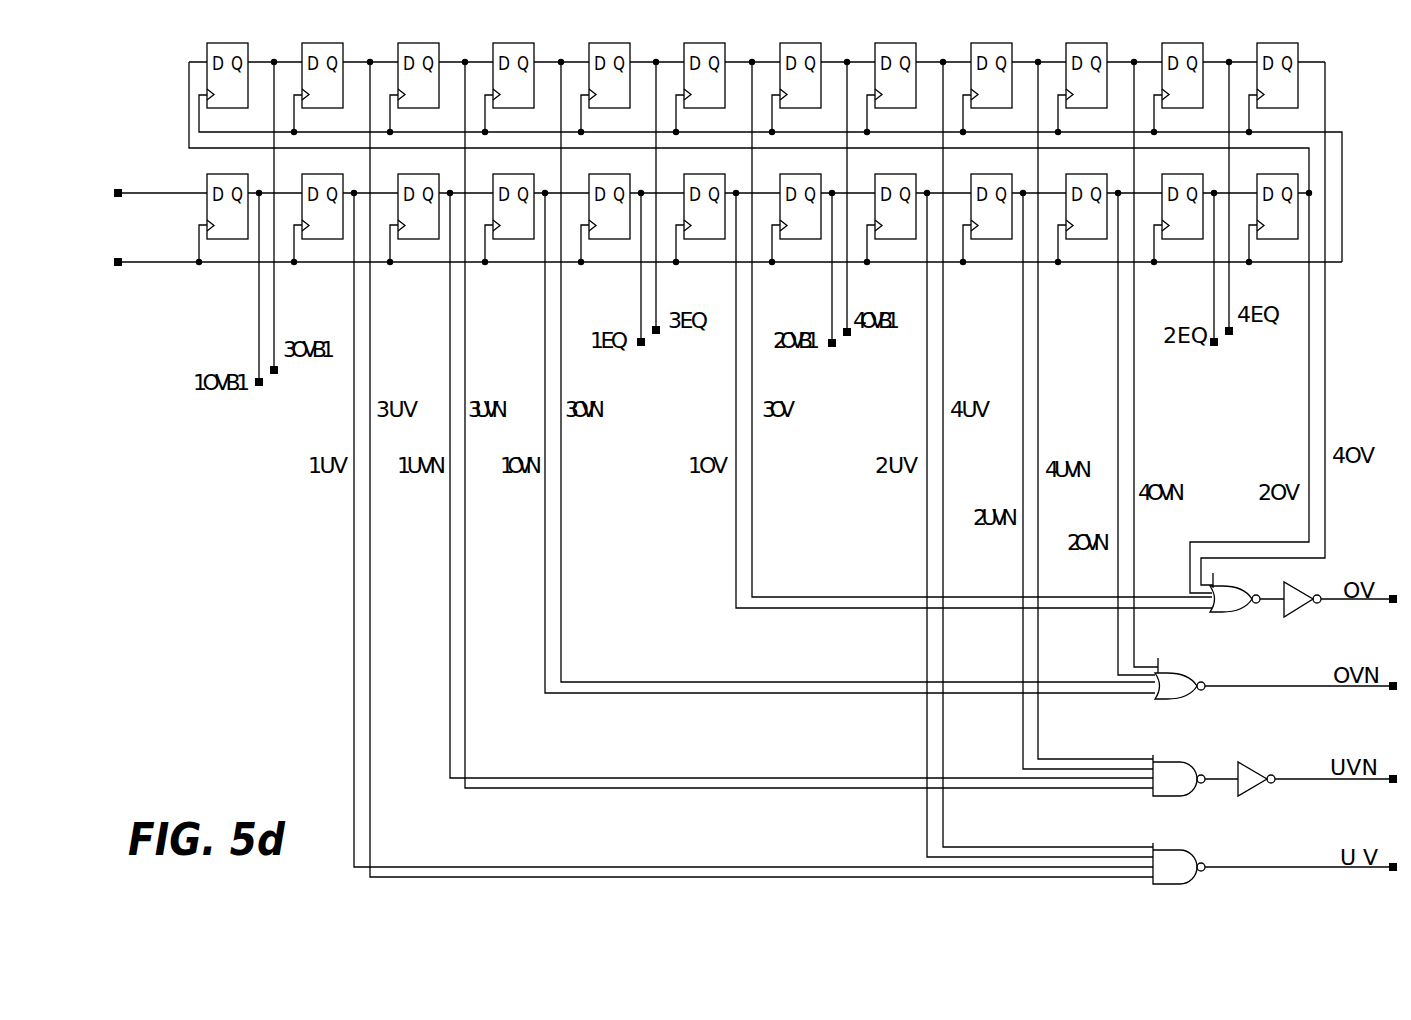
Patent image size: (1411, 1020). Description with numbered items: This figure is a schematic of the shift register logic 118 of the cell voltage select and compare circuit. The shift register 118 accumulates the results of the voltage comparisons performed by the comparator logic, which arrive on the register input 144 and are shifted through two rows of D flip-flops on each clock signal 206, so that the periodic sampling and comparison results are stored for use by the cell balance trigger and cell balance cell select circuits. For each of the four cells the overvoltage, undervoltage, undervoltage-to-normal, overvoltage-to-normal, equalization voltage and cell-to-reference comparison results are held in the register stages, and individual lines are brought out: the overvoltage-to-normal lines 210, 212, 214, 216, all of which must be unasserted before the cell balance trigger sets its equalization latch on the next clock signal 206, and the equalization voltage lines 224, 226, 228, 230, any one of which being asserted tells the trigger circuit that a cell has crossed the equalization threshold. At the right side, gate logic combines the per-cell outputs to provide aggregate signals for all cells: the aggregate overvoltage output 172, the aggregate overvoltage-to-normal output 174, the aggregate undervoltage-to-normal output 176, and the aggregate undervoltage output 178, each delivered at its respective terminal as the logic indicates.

The shift register logic 118 is at (189, 529).
The comparator output input line 144 is at (118, 189).
The clock signal 206 is at (118, 268).
The OVN line for cell one 210 is at (546, 312).
The OVN line for cell three 214 is at (562, 276).
The EQ line for cell three 228 is at (657, 283).
The OVN line for cell two 212 is at (1118, 297).
The OVN line for cell four 216 is at (1134, 287).
The EQ line for cell four 230 is at (1229, 290).
The EQ line for cell one 224 is at (645, 343).
The EQ line for cell two 226 is at (1216, 344).
The aggregate overvoltage signal OV 172 is at (1392, 605).
The aggregate overvoltage-to-normal signal OVN 174 is at (1392, 690).
The aggregate undervoltage-to-normal signal UVN 176 is at (1392, 783).
The aggregate undervoltage signal UV 178 is at (1392, 871).